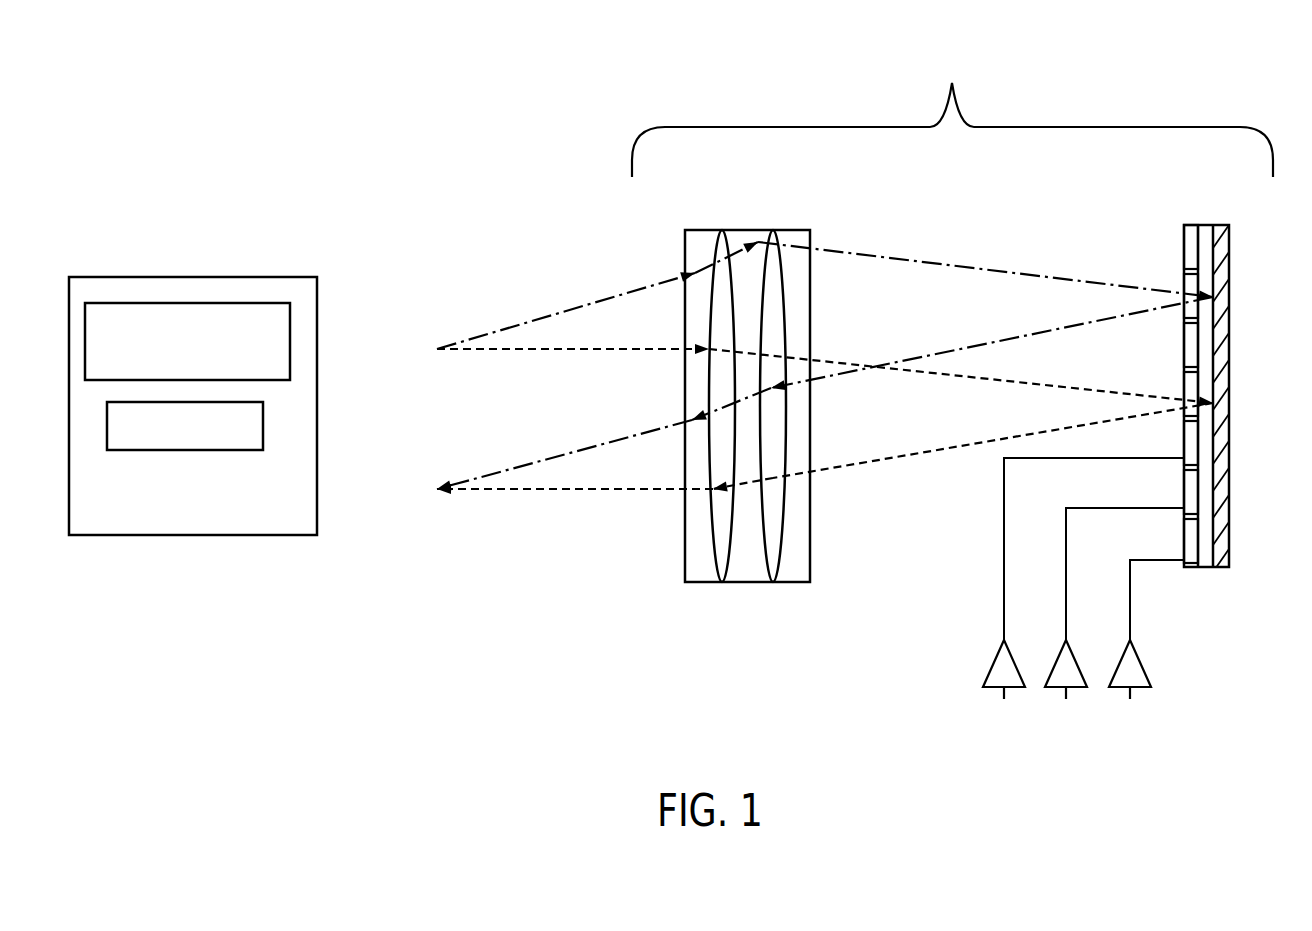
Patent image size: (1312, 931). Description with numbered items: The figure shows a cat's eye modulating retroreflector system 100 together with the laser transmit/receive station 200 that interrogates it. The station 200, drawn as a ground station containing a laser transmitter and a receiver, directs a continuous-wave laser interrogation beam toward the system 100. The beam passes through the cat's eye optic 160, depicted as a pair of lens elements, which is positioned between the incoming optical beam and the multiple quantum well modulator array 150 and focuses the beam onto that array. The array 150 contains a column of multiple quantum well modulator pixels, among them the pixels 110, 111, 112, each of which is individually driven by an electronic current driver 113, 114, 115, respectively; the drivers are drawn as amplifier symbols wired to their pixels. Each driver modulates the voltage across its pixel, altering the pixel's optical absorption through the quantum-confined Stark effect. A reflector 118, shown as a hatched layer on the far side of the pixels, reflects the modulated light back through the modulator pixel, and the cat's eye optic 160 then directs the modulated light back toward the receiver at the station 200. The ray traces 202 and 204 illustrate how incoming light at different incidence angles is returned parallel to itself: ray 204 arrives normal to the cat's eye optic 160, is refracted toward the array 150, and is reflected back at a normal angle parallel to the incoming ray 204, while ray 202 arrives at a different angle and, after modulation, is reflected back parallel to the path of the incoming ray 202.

The cat's eye modulating retroreflector system 100 is at (952, 115).
The modulator pixel 110 is at (1192, 547).
The modulator pixel 111 is at (1192, 493).
The modulator pixel 112 is at (1192, 450).
The electronic current driver 113 is at (991, 665).
The electronic current driver 114 is at (1142, 663).
The electronic current driver 115 is at (1060, 688).
The reflector 118 is at (1233, 426).
The multiple quantum well modulator array 150 is at (1145, 392).
The cat's eye optic 160 is at (820, 212).
The laser transmit/receive station 200 is at (148, 537).
The ray 202 is at (537, 318).
The ray 204 is at (545, 353).